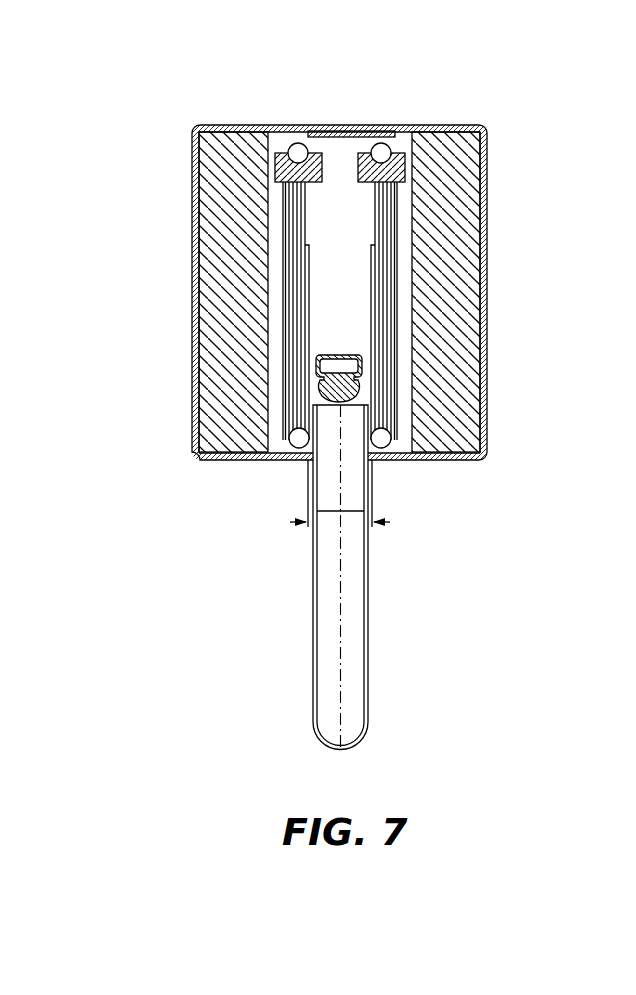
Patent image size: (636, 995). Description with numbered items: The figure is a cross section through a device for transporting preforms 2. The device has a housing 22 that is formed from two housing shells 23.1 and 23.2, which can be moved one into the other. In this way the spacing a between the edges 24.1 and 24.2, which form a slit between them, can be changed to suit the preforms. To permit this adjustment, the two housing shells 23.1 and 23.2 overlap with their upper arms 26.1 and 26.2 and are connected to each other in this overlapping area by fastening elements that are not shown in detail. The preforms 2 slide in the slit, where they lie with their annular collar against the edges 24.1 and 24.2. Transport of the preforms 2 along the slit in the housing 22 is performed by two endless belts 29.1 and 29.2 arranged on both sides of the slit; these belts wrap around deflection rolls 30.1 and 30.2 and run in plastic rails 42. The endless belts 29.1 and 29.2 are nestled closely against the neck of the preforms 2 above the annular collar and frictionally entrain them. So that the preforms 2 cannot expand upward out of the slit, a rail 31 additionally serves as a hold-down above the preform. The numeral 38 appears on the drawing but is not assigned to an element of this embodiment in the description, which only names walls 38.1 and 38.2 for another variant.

The preform 2 is at (378, 681).
The housing 22 is at (430, 106).
The housing shell 23.1 is at (187, 373).
The housing shell 23.2 is at (495, 298).
The edge 24.1 is at (307, 461).
The edge 24.2 is at (337, 442).
The upper arm 26.1 is at (240, 124).
The upper arm 26.2 is at (448, 132).
The endless belt 29.1 is at (298, 150).
The endless belt 29.2 is at (380, 150).
The deflection roll 30.1 is at (294, 277).
The deflection roll 30.2 is at (387, 233).
The rail 31 is at (337, 347).
The bottom wall 38 is at (297, 453).
The plastic rail 42 is at (277, 172).
The spacing a is at (340, 523).